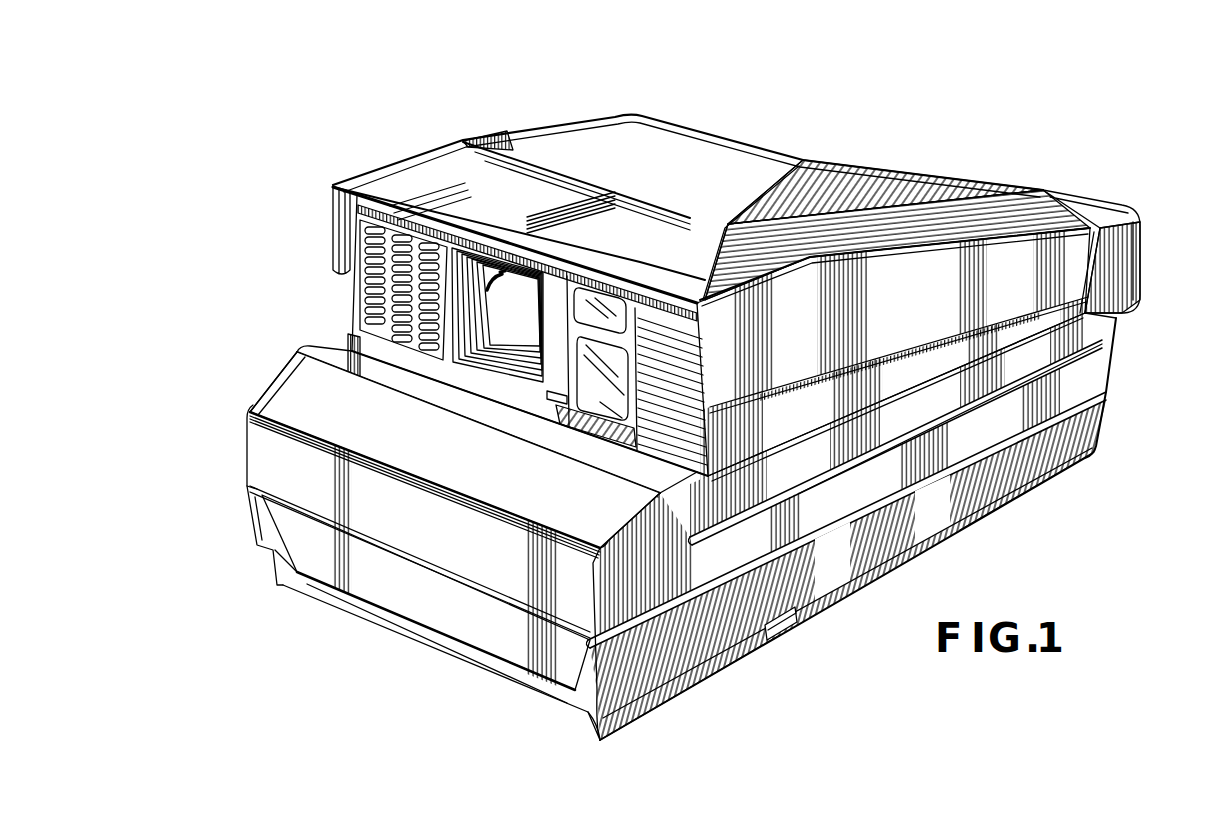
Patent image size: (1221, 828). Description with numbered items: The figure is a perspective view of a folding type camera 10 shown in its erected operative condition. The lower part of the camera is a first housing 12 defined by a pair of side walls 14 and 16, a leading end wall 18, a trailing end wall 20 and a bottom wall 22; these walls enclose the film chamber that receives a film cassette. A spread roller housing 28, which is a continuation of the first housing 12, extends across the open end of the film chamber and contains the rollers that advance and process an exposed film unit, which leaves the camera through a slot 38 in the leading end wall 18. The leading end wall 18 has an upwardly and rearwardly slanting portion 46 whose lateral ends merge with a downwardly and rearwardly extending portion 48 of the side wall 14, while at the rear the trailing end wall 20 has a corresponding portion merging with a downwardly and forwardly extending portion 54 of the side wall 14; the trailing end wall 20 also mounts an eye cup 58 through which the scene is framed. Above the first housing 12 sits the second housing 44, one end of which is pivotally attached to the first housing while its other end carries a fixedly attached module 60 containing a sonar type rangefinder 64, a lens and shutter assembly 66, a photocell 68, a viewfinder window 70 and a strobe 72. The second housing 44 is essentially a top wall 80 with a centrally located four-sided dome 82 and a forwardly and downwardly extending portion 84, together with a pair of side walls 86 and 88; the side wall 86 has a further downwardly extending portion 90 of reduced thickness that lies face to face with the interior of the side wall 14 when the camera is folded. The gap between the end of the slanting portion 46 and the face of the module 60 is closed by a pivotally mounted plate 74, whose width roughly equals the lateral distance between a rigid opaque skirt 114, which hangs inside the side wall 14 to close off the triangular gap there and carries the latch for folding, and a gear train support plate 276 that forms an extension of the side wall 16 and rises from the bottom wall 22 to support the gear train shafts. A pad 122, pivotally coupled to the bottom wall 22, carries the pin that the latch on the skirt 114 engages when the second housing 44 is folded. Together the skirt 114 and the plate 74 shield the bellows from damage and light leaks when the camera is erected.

The folding type camera 10 is at (920, 148).
The first housing 12 is at (723, 677).
The side wall 14 is at (830, 540).
The side wall 16 is at (247, 455).
The leading end wall 18 is at (410, 598).
The trailing end wall 20 is at (1087, 428).
The bottom wall 22 is at (985, 513).
The spread roller housing 28 is at (667, 713).
The slot 38 is at (465, 648).
The second housing 44 is at (697, 122).
The slanting portion 46 is at (462, 453).
The downwardly and rearwardly extending portion 48 is at (710, 492).
The downwardly and forwardly extending portion 54 is at (1087, 290).
The eye cup 58 is at (1138, 228).
The module 60 is at (566, 372).
The sonar type rangefinder 64 is at (362, 290).
The lens and shutter assembly 66 is at (470, 355).
The photocell 68 is at (590, 291).
The viewfinder window 70 is at (602, 416).
The strobe 72 is at (668, 416).
The plate 74 is at (470, 402).
The top wall 80 is at (503, 140).
The four-sided dome 82 is at (600, 140).
The forwardly and downwardly extending portion 84 is at (489, 212).
The side wall 86 is at (1005, 330).
The side wall 88 is at (330, 228).
The downwardly extending portion 90 is at (1040, 338).
The skirt 114 is at (767, 543).
The pad 122 is at (797, 628).
The gear train support plate 276 is at (340, 345).